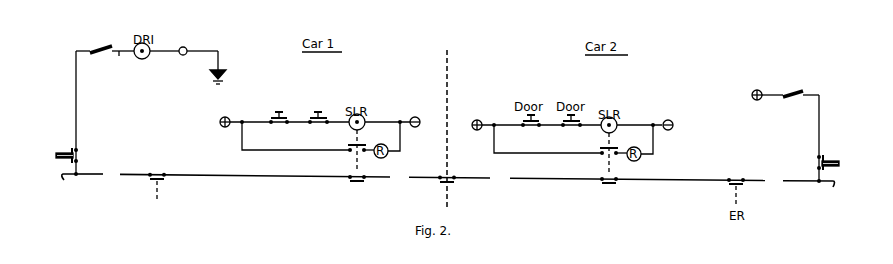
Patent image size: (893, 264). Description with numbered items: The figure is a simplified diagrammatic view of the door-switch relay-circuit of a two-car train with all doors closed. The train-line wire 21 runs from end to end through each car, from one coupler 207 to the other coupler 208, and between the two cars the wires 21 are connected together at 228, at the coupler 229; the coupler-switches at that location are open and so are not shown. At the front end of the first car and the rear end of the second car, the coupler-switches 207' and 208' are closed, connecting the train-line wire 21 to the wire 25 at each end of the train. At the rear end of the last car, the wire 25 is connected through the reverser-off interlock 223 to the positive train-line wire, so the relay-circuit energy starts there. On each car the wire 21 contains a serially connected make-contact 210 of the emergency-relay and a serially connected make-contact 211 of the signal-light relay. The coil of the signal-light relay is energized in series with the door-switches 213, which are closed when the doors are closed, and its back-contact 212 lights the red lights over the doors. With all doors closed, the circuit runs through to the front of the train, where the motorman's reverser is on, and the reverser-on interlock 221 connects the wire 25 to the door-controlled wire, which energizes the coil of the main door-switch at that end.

The train-line wire 21 is at (448, 178).
The circuit wire 25 is at (447, 116).
The coupler 207 is at (80, 181).
The coupler-switch 207' is at (85, 149).
The coupler 208 is at (819, 189).
The coupler-switch 208' is at (813, 157).
The make-contact of emergency-relay 210 is at (163, 165).
The make-contact of signal-light relay 211 is at (358, 181).
The back-contact of signal-light relay 212 is at (352, 151).
The door-switches 213 is at (317, 125).
The reverser-on interlock 221 is at (98, 50).
The reverser-off interlock 223 is at (796, 98).
The train-line wire connection 228 is at (452, 182).
The coupler 229 is at (449, 67).